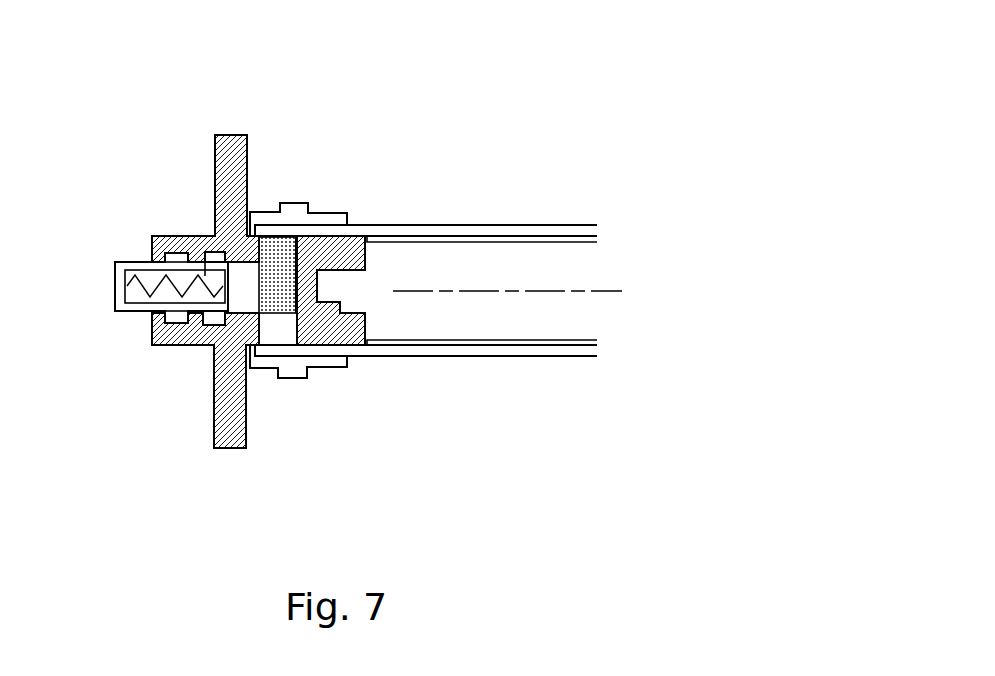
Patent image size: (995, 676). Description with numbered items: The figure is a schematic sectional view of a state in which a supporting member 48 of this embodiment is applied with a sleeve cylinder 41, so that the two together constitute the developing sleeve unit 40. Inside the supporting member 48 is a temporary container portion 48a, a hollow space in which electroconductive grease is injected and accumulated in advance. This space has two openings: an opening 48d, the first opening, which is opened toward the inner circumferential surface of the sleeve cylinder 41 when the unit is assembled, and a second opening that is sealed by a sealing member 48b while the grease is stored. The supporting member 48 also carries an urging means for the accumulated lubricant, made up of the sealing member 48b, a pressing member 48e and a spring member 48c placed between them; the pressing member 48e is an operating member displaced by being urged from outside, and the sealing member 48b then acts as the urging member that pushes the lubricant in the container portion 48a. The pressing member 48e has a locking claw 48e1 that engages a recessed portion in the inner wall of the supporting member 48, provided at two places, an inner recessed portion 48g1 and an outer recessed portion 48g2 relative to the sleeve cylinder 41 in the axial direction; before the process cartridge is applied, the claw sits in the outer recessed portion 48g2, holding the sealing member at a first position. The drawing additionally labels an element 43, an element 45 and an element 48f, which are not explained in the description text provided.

The developing sleeve unit 40 is at (408, 170).
The sleeve cylinder 41 is at (410, 229).
The cable 43 is at (534, 271).
The bracket 45 is at (316, 207).
The supporting member 48 is at (247, 136).
The temporary container portion 48a is at (280, 300).
The sealing member 48b is at (222, 338).
The spring member 48c is at (145, 280).
The opening 48d is at (293, 236).
The pressing member 48e is at (115, 303).
The locking claw 48e1 is at (172, 322).
The contact piece 48f is at (208, 270).
The inner recessed portion 48g1 is at (205, 253).
The outer recessed portion 48g2 is at (180, 258).